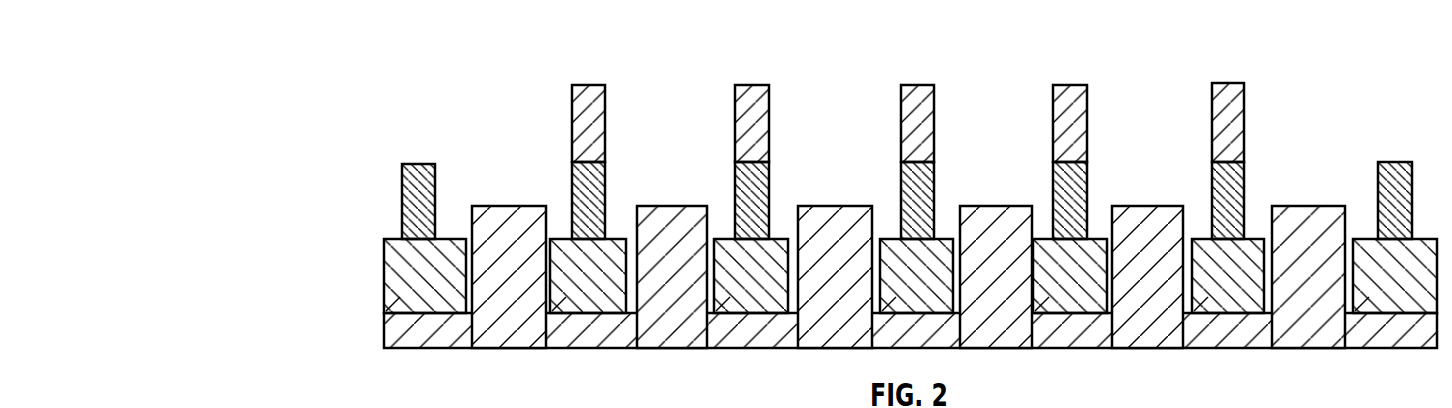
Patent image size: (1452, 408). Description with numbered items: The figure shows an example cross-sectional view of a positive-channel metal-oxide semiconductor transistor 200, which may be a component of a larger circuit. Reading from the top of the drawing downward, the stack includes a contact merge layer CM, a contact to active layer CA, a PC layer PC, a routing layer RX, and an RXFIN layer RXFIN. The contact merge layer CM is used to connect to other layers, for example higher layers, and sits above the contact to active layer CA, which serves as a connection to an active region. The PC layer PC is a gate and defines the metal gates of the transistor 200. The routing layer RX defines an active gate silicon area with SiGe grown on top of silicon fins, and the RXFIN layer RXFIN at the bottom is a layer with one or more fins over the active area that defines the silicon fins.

The PMOS transistor 200 is at (783, 175).
The contact merge layer CM is at (572, 124).
The contact to active layer CA is at (402, 177).
The PC layer PC is at (472, 225).
The routing layer RX is at (384, 276).
The RXFIN layer RXFIN is at (423, 330).